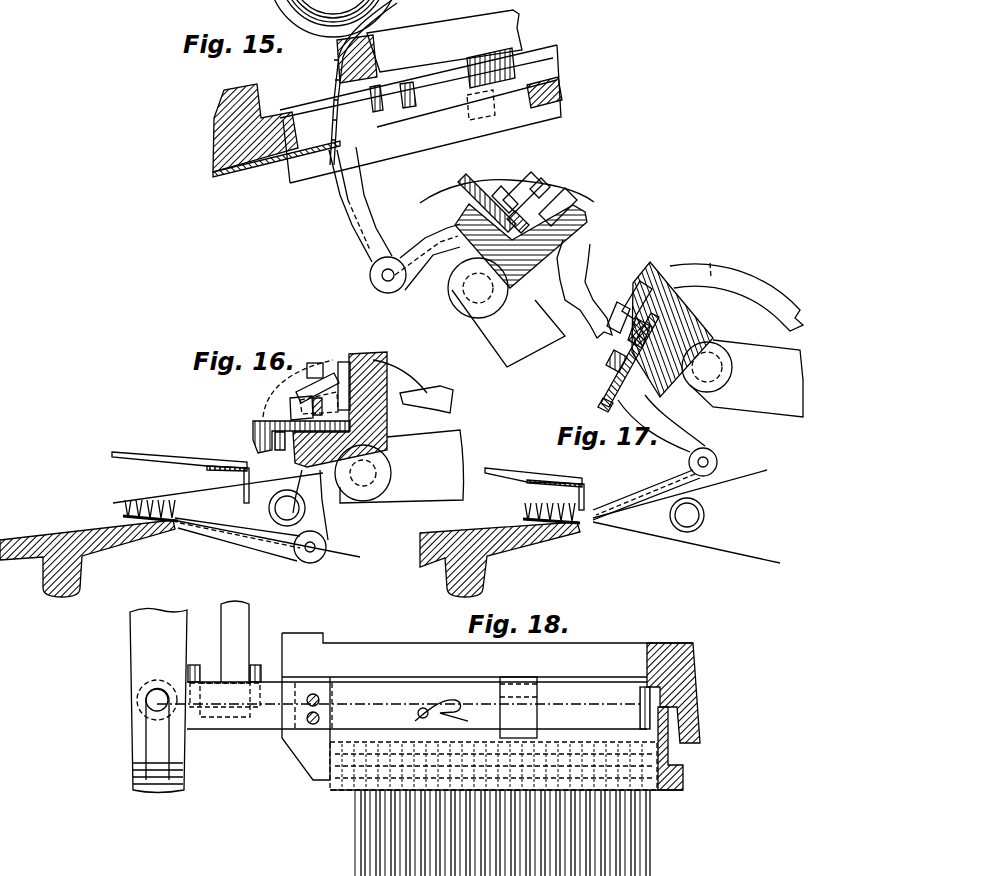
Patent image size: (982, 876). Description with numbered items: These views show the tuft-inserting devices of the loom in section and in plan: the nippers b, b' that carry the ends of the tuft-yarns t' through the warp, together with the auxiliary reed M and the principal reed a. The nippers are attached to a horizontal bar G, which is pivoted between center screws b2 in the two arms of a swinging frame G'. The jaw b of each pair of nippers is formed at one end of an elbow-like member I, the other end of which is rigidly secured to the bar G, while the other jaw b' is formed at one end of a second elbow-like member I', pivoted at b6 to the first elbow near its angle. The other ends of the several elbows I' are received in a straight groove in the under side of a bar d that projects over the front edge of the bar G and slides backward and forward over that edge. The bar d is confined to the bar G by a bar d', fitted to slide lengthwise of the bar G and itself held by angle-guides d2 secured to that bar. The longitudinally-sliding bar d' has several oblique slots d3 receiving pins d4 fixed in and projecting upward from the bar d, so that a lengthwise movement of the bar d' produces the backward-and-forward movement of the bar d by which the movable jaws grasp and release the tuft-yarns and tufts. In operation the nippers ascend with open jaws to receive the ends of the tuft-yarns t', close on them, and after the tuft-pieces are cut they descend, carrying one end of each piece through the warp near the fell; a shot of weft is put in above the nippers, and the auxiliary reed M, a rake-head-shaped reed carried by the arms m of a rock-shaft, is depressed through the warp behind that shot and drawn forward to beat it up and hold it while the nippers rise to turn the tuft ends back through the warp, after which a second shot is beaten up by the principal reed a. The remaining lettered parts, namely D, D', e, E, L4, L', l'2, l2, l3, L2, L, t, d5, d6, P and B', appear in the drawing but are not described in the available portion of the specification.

In FIG. 15, the feed wheel D is at (333, 30).
In FIG. 15, the feed wheel flange D' is at (328, 18).
In FIG. 15, the hub block e is at (491, 438).
In FIG. 15, the bar E is at (444, 41).
In FIG. 15, the guide bar L4 is at (422, 76).
In FIG. 15, the casing L' is at (421, 131).
In FIG. 15, the slot l'2 is at (486, 117).
In FIG. 15, the stop l2 is at (491, 438).
In FIG. 15, the stop l3 is at (491, 438).
In FIG. 15, the casing block L2 is at (491, 438).
In FIG. 15, the base plate L is at (491, 438).
In FIG. 15, the tape t is at (352, 82).
In FIG. 15, the tuft-yarns t' is at (314, 100).
In FIG. 16, the tuft-yarns t' is at (150, 503).
In FIG. 17, the tuft-yarns t' is at (549, 506).
In FIG. 15, the nipper jaw b is at (330, 175).
In FIG. 16, the nipper jaw b is at (182, 542).
In FIG. 17, the nipper jaw b is at (594, 538).
In FIG. 18, the nipper jaw b is at (502, 848).
In FIG. 15, the nipper jaw b' is at (370, 171).
In FIG. 16, the nipper jaw b' is at (191, 508).
In FIG. 17, the nipper jaw b' is at (606, 492).
In FIG. 18, the nipper jaw b' is at (501, 869).
In FIG. 15, the elbow-like member I' is at (400, 242).
In FIG. 16, the elbow-like member I' is at (303, 504).
In FIG. 17, the elbow-like member I' is at (661, 423).
In FIG. 18, the elbow-like member I' is at (493, 833).
In FIG. 15, the elbow-like member I is at (354, 273).
In FIG. 16, the elbow-like member I is at (236, 517).
In FIG. 17, the elbow-like member I is at (686, 492).
In FIG. 18, the elbow-like member I is at (657, 825).
In FIG. 15, the pivot b6 is at (388, 293).
In FIG. 16, the pivot b6 is at (311, 563).
In FIG. 17, the pivot b6 is at (717, 462).
In FIG. 15, the center screws b2 is at (463, 290).
In FIG. 16, the center screws b2 is at (364, 488).
In FIG. 17, the center screws b2 is at (710, 392).
In FIG. 15, the horizontal bar G is at (450, 438).
In FIG. 16, the horizontal bar G is at (491, 438).
In FIG. 17, the horizontal bar G is at (746, 378).
In FIG. 18, the horizontal bar G is at (491, 438).
In FIG. 15, the swinging frame G' is at (508, 328).
In FIG. 16, the swinging frame G' is at (402, 466).
In FIG. 17, the swinging frame G' is at (491, 438).
In FIG. 18, the swinging frame G' is at (491, 438).
In FIG. 15, the bar d is at (491, 438).
In FIG. 16, the bar d is at (491, 438).
In FIG. 17, the bar d is at (491, 438).
In FIG. 18, the bar d is at (491, 438).
In FIG. 15, the longitudinally-sliding bar d' is at (505, 186).
In FIG. 16, the longitudinally-sliding bar d' is at (284, 408).
In FIG. 17, the longitudinally-sliding bar d' is at (613, 311).
In FIG. 18, the longitudinally-sliding bar d' is at (491, 438).
In FIG. 15, the angle-guides d2 is at (523, 185).
In FIG. 16, the angle-guides d2 is at (344, 374).
In FIG. 17, the angle-guides d2 is at (645, 286).
In FIG. 18, the angle-guides d2 is at (518, 707).
In FIG. 15, the oblique slots d3 is at (491, 438).
In FIG. 16, the oblique slots d3 is at (312, 402).
In FIG. 17, the oblique slots d3 is at (491, 438).
In FIG. 18, the oblique slots d3 is at (442, 716).
In FIG. 15, the pins d4 is at (558, 203).
In FIG. 16, the pins d4 is at (310, 393).
In FIG. 17, the pins d4 is at (626, 345).
In FIG. 15, the pin d5 is at (548, 181).
In FIG. 16, the pin d5 is at (310, 363).
In FIG. 18, the pin d5 is at (150, 703).
In FIG. 15, the arm d6 is at (516, 259).
In FIG. 16, the arm d6 is at (358, 388).
In FIG. 17, the arm d6 is at (736, 297).
In FIG. 18, the arm d6 is at (158, 700).
In FIG. 16, the arms m is at (491, 438).
In FIG. 17, the arms m is at (491, 438).
In FIG. 16, the auxiliary reed M is at (244, 485).
In FIG. 17, the auxiliary reed M is at (579, 490).
In FIG. 16, the roller P is at (281, 508).
In FIG. 17, the roller P is at (695, 515).
In FIG. 16, the bed block B' is at (491, 438).
In FIG. 17, the bed block B' is at (491, 438).
In FIG. 18, the principal reed a is at (506, 766).